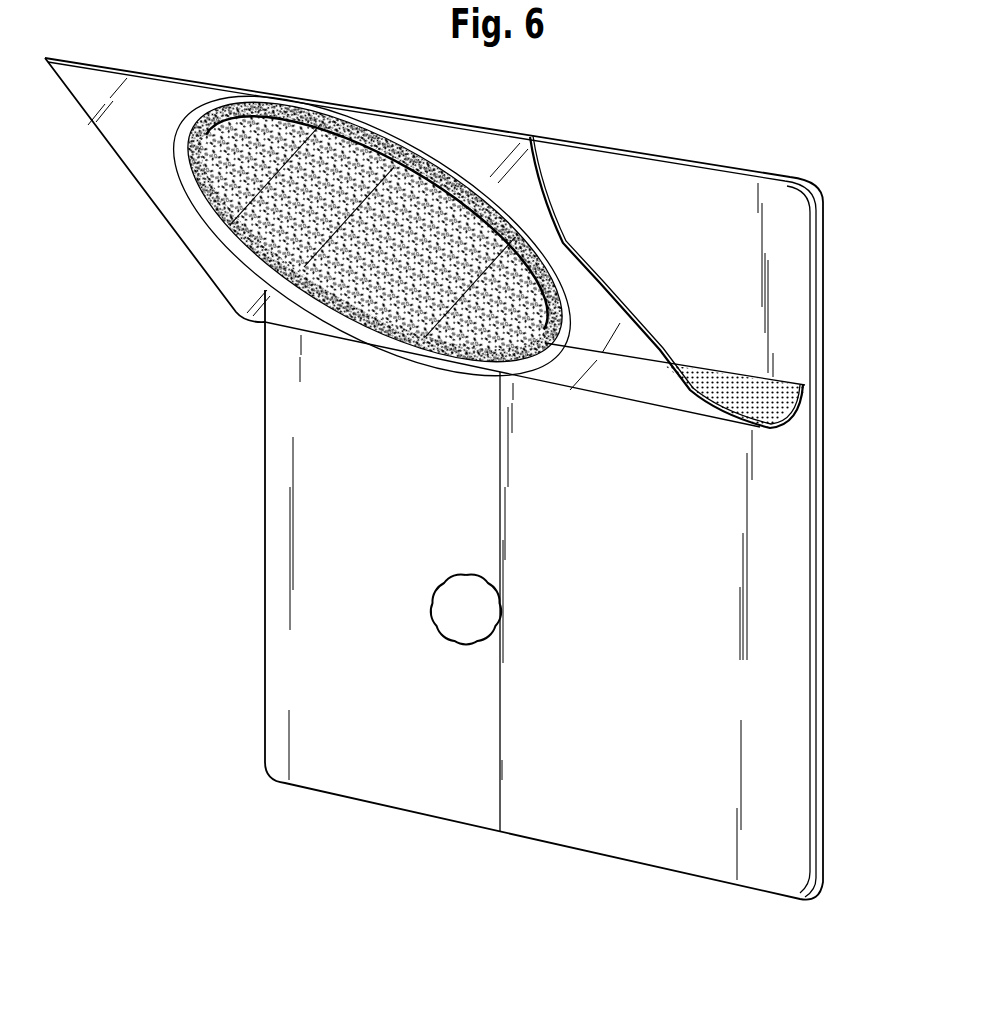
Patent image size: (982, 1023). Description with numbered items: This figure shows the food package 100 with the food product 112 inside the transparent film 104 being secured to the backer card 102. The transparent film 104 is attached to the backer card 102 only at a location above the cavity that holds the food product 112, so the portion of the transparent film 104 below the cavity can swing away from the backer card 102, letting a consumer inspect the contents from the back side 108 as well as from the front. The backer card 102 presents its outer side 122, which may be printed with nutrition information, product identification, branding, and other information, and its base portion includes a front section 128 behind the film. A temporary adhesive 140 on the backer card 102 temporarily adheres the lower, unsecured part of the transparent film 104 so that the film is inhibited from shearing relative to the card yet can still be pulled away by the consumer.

The food package 100 is at (462, 470).
The backer card 102 is at (434, 479).
The transparent film 104 is at (778, 432).
The back side 108 is at (462, 263).
The food product 112 is at (250, 257).
The outer side 122 is at (613, 628).
The front section 128 is at (390, 610).
The temporary adhesive 140 is at (453, 657).